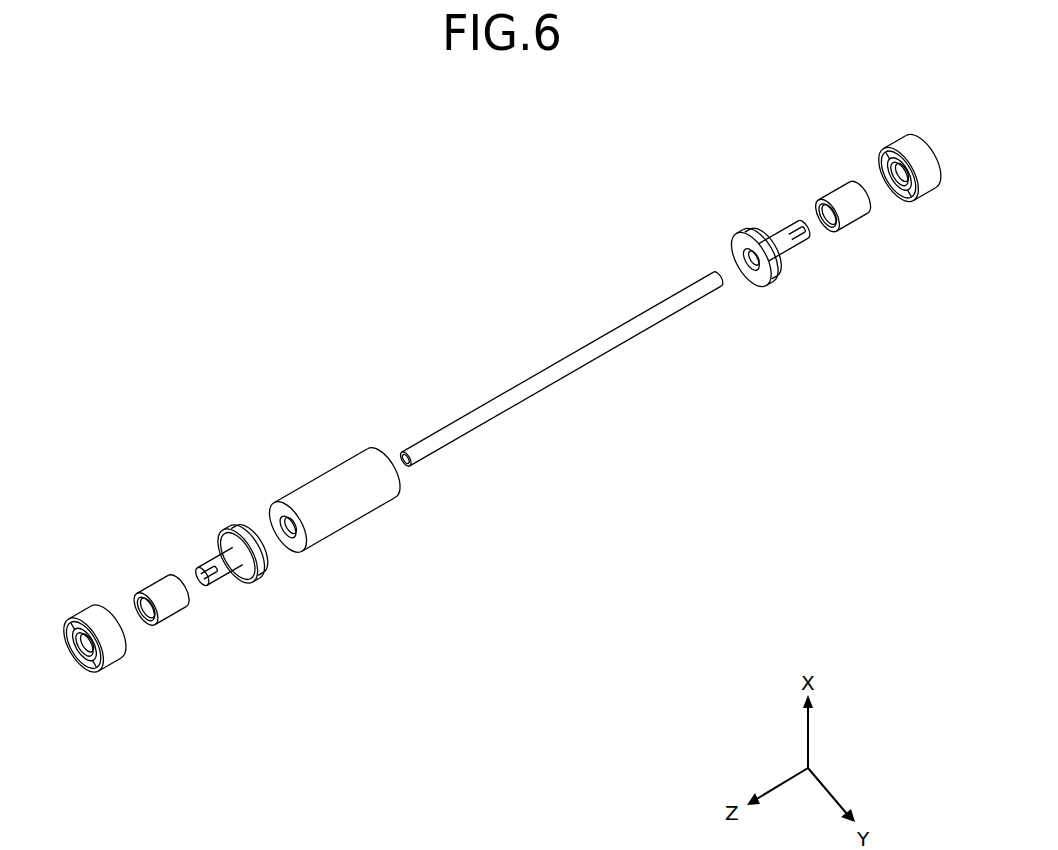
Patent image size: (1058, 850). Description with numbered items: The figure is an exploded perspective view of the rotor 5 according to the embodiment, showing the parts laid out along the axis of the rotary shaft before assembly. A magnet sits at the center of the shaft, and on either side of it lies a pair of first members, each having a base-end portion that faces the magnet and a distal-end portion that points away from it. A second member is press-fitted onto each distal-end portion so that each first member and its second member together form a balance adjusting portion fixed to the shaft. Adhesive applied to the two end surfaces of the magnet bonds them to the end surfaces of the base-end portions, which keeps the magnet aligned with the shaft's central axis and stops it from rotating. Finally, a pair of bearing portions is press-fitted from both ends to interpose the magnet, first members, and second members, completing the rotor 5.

The rotor 5 is at (290, 247).